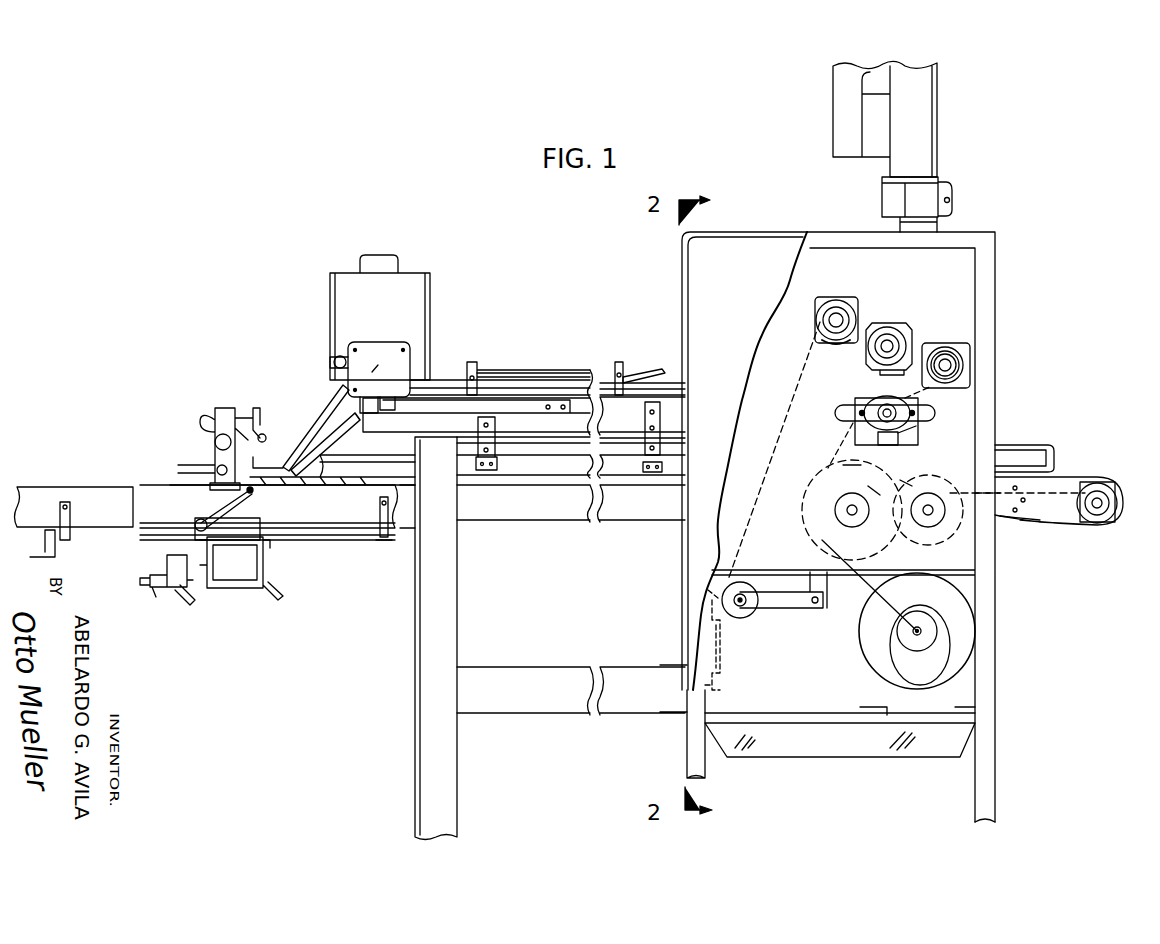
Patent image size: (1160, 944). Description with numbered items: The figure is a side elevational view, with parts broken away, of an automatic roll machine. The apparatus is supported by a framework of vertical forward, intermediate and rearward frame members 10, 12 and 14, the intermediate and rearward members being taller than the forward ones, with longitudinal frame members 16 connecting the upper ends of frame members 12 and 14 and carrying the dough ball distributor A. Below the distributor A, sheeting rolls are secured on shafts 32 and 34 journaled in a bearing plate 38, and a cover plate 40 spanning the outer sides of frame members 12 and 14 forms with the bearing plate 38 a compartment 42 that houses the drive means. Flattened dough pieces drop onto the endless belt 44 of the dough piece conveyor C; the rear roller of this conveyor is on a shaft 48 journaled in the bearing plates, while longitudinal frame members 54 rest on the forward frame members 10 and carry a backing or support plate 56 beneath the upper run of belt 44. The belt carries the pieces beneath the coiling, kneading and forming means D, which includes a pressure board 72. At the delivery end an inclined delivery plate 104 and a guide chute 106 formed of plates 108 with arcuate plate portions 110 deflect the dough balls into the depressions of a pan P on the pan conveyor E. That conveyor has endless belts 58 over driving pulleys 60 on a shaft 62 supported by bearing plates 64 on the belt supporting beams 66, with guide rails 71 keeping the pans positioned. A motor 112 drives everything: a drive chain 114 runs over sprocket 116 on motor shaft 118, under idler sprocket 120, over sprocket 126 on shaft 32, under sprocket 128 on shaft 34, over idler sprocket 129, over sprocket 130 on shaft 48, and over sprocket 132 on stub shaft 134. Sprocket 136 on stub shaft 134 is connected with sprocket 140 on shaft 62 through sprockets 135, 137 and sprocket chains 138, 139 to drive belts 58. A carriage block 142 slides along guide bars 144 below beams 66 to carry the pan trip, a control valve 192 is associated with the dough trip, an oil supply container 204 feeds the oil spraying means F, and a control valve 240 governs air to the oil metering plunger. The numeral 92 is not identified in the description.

The distributor A is at (826, 103).
The vertical forward frame members 10 is at (415, 642).
The vertical intermediate frame members 12 is at (687, 725).
The vertical rearward frame members 14 is at (982, 775).
The longitudinal frame members 16 is at (850, 232).
The sheeting roll shaft 32 is at (848, 316).
The sheeting roll shaft 34 is at (898, 342).
The bearing plate 38 is at (853, 527).
The cover plate 40 is at (744, 461).
The compartment 42 is at (815, 283).
The endless belt 44 is at (437, 383).
The shaft 48 is at (880, 407).
The longitudinal frame members 54 is at (543, 423).
The backing or support plate 56 is at (588, 383).
The endless belts 58 is at (1062, 478).
The driving pulleys 60 is at (1110, 483).
The shaft 62 is at (1103, 522).
The bearing plates 64 is at (1065, 522).
The beams 66 is at (622, 505).
The guide rails 71 is at (468, 468).
The pressure board 72 is at (563, 378).
The upper rail 92 is at (505, 370).
The inclined delivery plate 104 is at (330, 422).
The guide chute 106 is at (327, 400).
The guide chute plates 108 is at (288, 453).
The arcuate plate portions 110 is at (252, 458).
The motor 112 is at (976, 628).
The drive chain 114 is at (768, 462).
The sprocket 116 is at (897, 628).
The motor shaft 118 is at (925, 635).
The idler sprocket 120 is at (748, 614).
The sprocket 126 is at (830, 344).
The sprocket 128 is at (913, 360).
The idler sprocket 129 is at (957, 355).
The sprocket 130 is at (910, 428).
The sprocket 132 is at (832, 463).
The stub shaft 134 is at (848, 507).
The sprocket 135 is at (905, 484).
The sprocket 136 is at (875, 484).
The sprocket 137 is at (936, 530).
The sprocket chain 138 is at (1007, 522).
The sprocket chain 139 is at (910, 528).
The sprocket 140 is at (1097, 520).
The carriage block 142 is at (230, 593).
The guide bars 144 is at (363, 540).
The control valve 192 is at (372, 342).
The oil supply container 204 is at (432, 283).
The control valve 240 is at (167, 577).
The dough piece conveyor C is at (655, 372).
The coiling, kneading and forming means D is at (540, 372).
The pan conveyor E is at (500, 487).
The oil spraying means F is at (223, 386).
The roll baking pan P is at (300, 487).